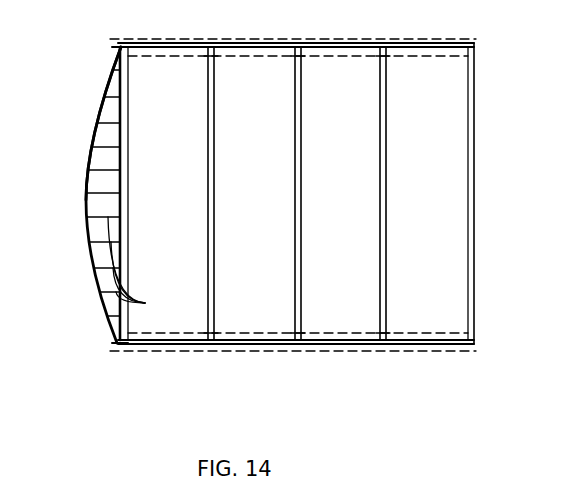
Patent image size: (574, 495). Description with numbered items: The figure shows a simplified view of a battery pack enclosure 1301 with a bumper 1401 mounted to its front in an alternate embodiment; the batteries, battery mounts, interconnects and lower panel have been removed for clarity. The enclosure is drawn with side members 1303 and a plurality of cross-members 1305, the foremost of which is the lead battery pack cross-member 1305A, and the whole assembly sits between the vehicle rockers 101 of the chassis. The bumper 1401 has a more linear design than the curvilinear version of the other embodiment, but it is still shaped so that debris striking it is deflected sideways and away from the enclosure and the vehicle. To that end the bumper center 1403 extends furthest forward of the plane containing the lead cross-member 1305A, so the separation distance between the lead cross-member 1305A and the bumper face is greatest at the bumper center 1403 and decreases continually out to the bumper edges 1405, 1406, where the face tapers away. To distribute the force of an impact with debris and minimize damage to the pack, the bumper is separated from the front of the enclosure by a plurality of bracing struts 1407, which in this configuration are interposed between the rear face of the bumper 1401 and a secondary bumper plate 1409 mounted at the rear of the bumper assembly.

The rockers 101 is at (229, 39).
The battery pack enclosure 1301 is at (514, 150).
The side members 1303 is at (370, 39).
The cross-members 1305 is at (230, 235).
The lead battery pack cross-member 1305A is at (163, 119).
The bumper 1401 is at (100, 107).
The bumper center 1403 is at (76, 192).
The bumper edge 1405 is at (121, 43).
The bumper edge 1406 is at (118, 346).
The struts 1407 is at (154, 267).
The secondary bumper plate 1409 is at (95, 135).